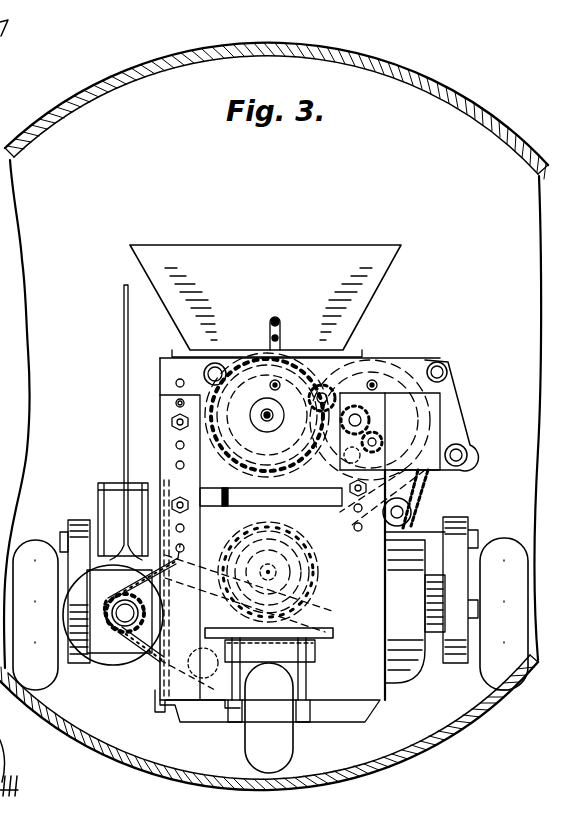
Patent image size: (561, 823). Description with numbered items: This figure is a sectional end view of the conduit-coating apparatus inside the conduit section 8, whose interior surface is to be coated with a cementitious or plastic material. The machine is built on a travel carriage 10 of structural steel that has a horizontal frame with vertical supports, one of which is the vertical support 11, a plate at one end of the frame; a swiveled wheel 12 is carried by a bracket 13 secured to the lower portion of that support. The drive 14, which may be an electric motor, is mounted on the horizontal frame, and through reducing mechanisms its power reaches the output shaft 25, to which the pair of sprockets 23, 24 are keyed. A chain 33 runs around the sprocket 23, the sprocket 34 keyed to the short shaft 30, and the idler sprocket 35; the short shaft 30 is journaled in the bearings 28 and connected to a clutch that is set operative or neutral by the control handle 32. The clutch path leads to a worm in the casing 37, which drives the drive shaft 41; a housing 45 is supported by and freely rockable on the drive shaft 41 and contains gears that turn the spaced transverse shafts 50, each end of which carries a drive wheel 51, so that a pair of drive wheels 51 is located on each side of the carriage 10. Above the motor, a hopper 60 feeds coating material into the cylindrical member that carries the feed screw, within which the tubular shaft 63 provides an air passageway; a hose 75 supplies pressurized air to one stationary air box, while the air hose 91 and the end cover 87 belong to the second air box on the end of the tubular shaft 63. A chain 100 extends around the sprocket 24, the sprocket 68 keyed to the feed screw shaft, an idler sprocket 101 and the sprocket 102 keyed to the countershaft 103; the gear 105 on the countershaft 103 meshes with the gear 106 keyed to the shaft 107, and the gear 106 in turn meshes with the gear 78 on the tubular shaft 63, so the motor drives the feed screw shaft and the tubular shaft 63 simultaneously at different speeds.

The conduit section 8 is at (462, 100).
The travel carriage 10 is at (377, 714).
The vertical support 11 is at (386, 630).
The swiveled wheel 12 is at (288, 754).
The bracket 13 is at (330, 660).
The drive 14 is at (422, 670).
The sprocket 23 is at (222, 590).
The sprocket 24 is at (307, 550).
The output shaft 25 is at (272, 565).
The bearings 28 is at (100, 640).
The short shaft 30 is at (120, 610).
The control handle 32 is at (123, 354).
The chain 33 is at (142, 652).
The sprocket 34 is at (146, 618).
The idler sprocket 35 is at (205, 652).
The casing 37 is at (110, 496).
The drive shaft 41 is at (62, 536).
The housing 45 is at (80, 521).
The transverse shafts 50 is at (60, 610).
The drive wheel 51 is at (34, 552).
The hopper 60 is at (300, 250).
The tubular shaft 63 is at (263, 412).
The sprocket 68 is at (266, 456).
The hose 75 is at (278, 318).
The gear 78 is at (321, 384).
The end cover 87 is at (226, 368).
The air hose 91 is at (278, 380).
The chain 100 is at (232, 498).
The idler sprocket 101 is at (418, 502).
The sprocket 102 is at (440, 472).
The countershaft 103 is at (455, 418).
The gear 105 is at (452, 386).
The gear 106 is at (374, 378).
The shaft 107 is at (382, 448).